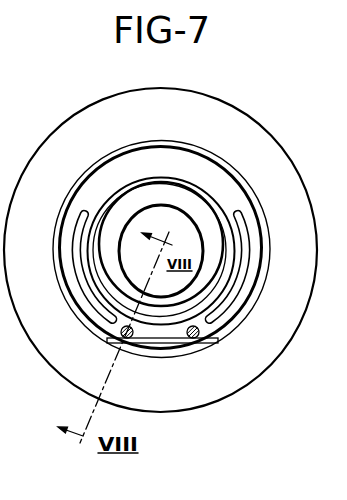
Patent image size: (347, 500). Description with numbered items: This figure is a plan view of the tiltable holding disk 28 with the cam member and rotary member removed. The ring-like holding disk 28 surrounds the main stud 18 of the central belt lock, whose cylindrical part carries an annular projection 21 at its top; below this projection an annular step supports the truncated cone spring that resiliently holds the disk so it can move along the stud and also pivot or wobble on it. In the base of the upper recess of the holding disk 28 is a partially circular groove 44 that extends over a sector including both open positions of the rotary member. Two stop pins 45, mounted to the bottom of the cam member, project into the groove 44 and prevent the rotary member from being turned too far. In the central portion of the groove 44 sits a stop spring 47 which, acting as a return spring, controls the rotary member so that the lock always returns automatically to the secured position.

The main stud 18 is at (188, 200).
The annular projection 21 is at (163, 180).
The holding disk 28 is at (268, 150).
The partially circular groove 44 is at (248, 248).
The stop pins 45 is at (199, 331).
The stop spring 47 is at (167, 343).